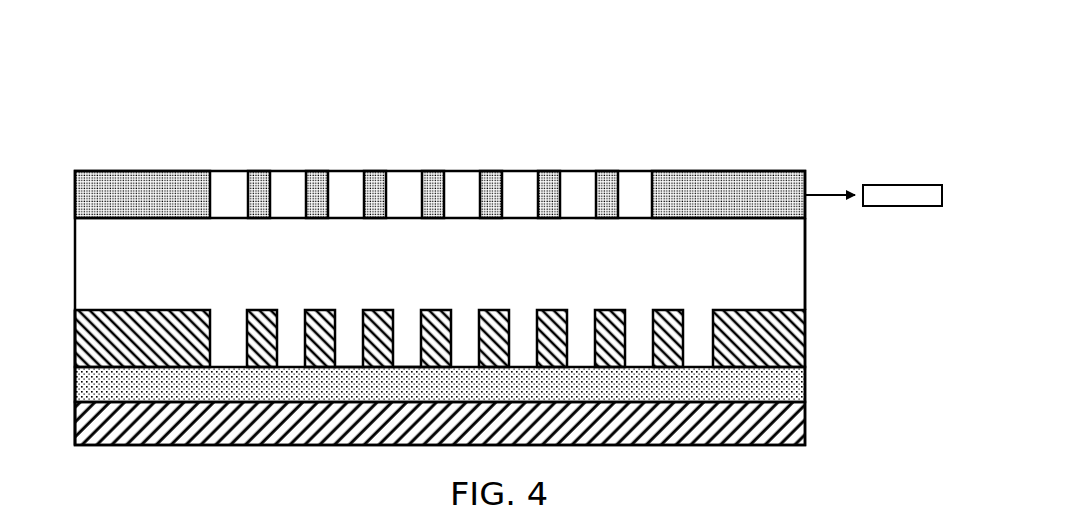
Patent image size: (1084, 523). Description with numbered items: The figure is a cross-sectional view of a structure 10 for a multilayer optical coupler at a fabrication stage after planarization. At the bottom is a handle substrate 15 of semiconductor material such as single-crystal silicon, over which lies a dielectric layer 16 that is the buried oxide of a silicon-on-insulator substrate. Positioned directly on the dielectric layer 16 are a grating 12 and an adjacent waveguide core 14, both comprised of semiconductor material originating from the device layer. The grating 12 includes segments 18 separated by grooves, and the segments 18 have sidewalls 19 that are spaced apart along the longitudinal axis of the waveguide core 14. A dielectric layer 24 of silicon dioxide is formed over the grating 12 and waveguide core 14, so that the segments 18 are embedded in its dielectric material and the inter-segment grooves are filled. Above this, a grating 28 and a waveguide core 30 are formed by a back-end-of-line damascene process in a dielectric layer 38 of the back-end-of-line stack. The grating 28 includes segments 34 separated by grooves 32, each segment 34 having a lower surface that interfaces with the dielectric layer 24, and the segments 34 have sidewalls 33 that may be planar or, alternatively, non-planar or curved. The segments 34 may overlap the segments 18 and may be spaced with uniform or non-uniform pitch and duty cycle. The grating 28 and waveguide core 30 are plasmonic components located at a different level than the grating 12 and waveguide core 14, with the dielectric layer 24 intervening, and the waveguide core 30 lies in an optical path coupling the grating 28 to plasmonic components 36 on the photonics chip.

The structure 10 is at (122, 49).
The grating 12 is at (223, 289).
The waveguide core 14 is at (120, 330).
The handle substrate 15 is at (765, 432).
The dielectric layer 16 is at (765, 393).
The segments 18 is at (265, 325).
The sidewalls 19 is at (355, 327).
The dielectric layer 24 is at (777, 287).
The grating 28 is at (223, 151).
The waveguide core 30 is at (120, 195).
The grooves 32 is at (502, 83).
The sidewalls 33 is at (358, 192).
The segments 34 is at (260, 190).
The plasmonic components 36 is at (918, 188).
The dielectric layer 38 is at (638, 203).